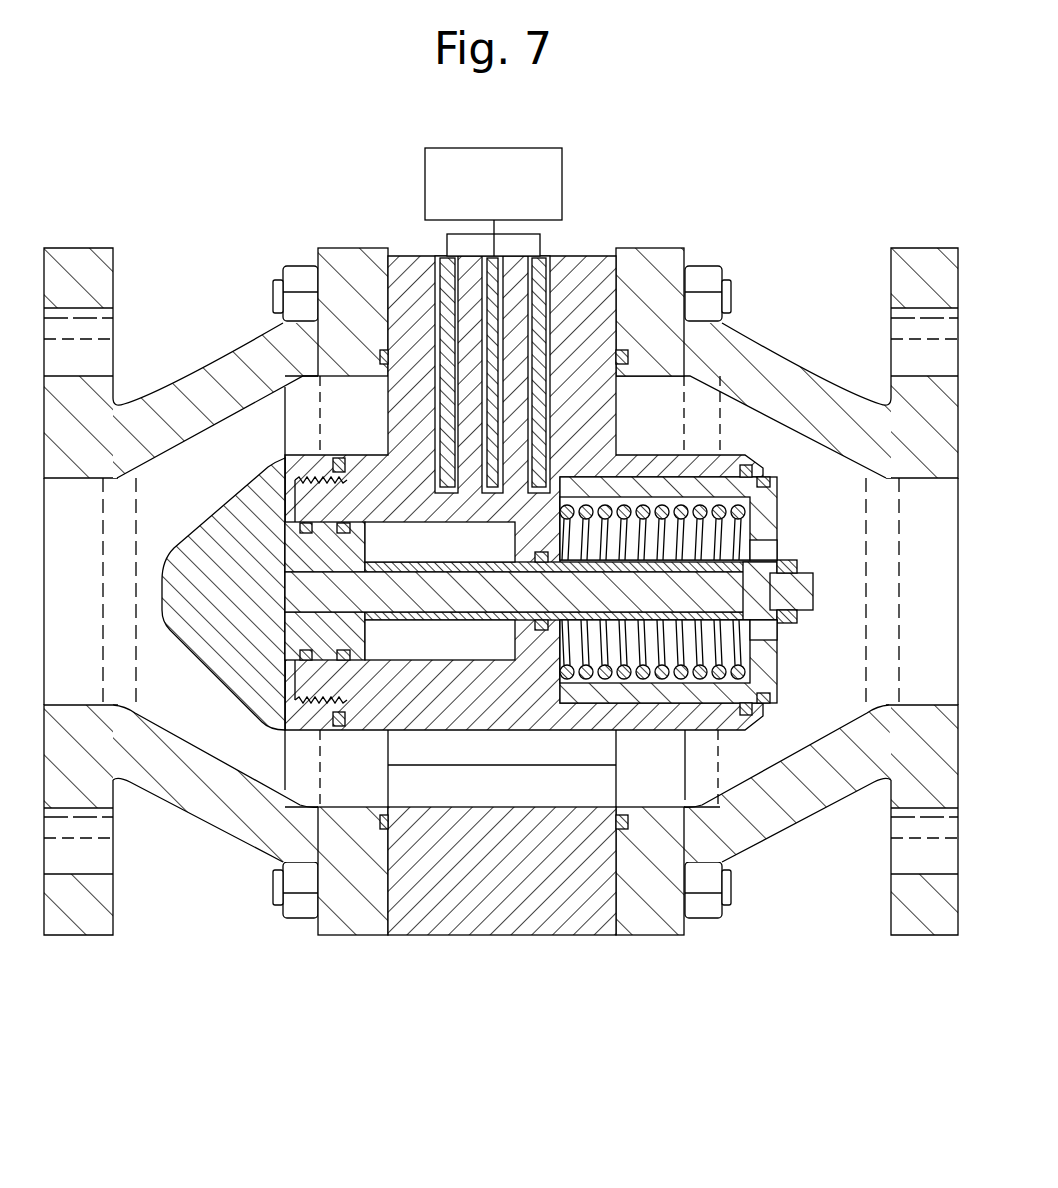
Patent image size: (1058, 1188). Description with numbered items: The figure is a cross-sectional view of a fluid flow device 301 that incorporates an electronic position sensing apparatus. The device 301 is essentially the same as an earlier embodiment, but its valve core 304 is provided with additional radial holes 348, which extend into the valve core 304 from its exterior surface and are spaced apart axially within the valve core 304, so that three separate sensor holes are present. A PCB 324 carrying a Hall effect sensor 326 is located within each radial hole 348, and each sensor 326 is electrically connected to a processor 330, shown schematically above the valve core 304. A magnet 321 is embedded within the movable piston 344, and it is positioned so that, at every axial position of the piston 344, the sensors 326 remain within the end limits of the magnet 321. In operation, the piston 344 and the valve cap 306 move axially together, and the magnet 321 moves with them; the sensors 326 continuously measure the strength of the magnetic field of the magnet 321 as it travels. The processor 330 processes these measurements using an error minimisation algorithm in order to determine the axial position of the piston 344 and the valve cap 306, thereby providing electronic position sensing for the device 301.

The fluid flow device 301 is at (203, 222).
The valve core 304 is at (530, 875).
The valve cap 306 is at (688, 485).
The magnet 321 is at (290, 660).
The PCB 324 is at (538, 332).
The Hall effect sensor 326 is at (447, 473).
The processor 330 is at (541, 155).
The piston 344 is at (432, 622).
The radial holes 348 is at (547, 257).